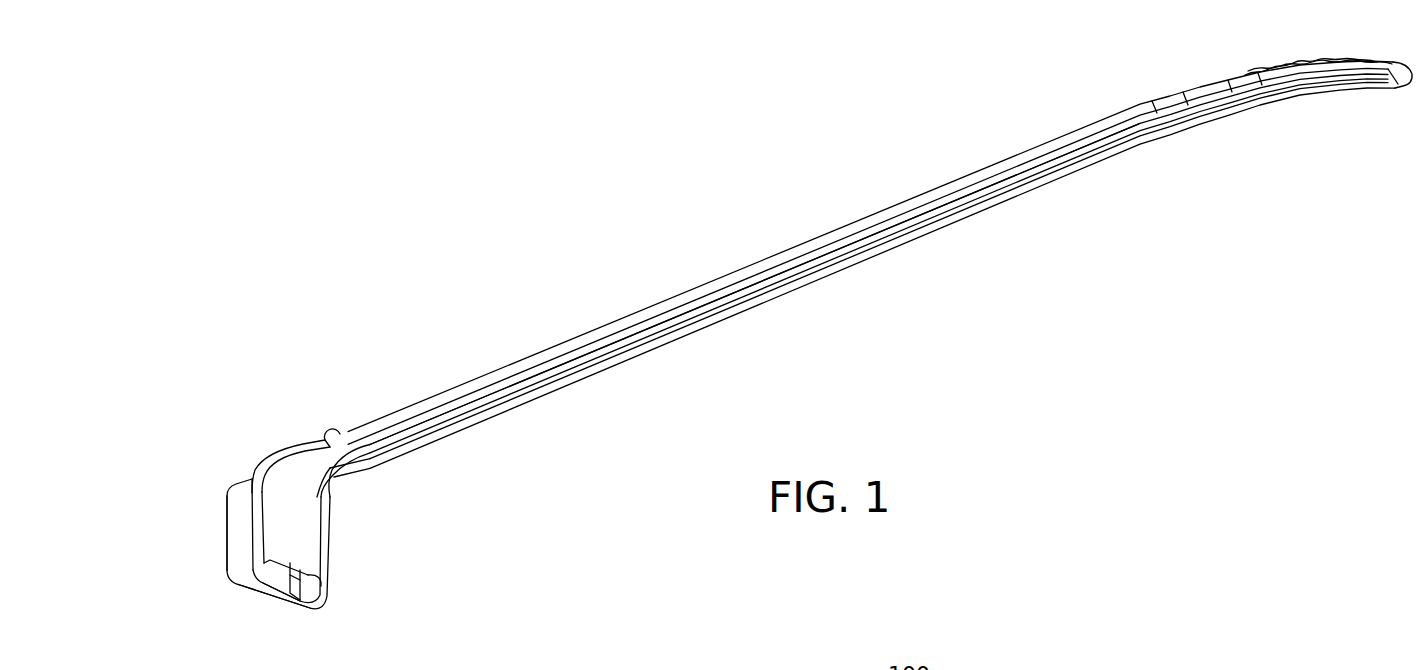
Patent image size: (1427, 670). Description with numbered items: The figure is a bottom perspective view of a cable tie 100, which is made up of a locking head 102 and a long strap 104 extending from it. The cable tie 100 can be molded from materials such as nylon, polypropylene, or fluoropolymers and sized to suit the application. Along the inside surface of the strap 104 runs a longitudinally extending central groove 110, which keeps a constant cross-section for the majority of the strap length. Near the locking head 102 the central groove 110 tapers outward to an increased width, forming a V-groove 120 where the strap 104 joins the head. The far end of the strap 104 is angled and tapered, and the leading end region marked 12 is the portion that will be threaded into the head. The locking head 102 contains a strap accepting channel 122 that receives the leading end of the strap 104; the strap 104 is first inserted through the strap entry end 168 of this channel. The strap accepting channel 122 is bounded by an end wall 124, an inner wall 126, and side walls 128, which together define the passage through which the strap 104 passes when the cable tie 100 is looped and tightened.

The cable tie 100 is at (445, 345).
The locking head 102 is at (302, 557).
The strap 104 is at (850, 223).
The central groove 110 is at (702, 313).
The strap tip with teeth 12 is at (1289, 80).
The V-groove 120 is at (325, 462).
The strap accepting channel 122 is at (292, 593).
The end wall 124 is at (263, 597).
The inner wall 126 is at (303, 513).
The side walls 128 is at (235, 515).
The strap entry end 168 is at (325, 593).